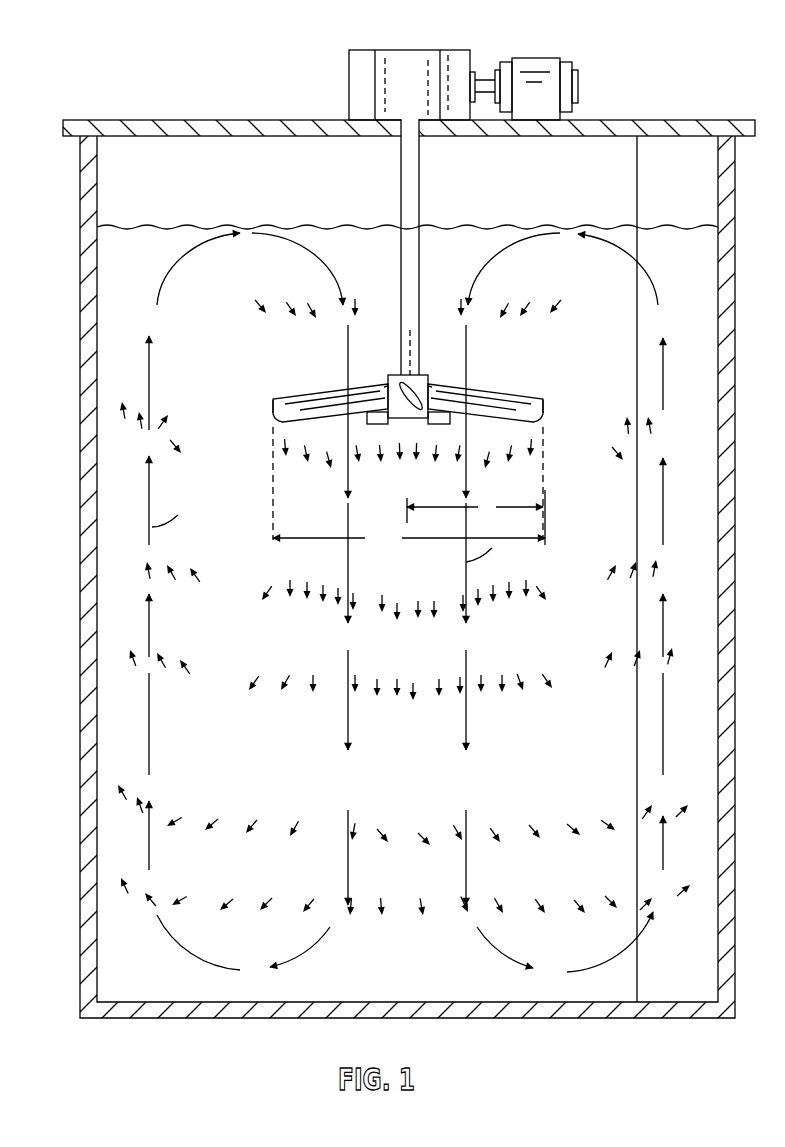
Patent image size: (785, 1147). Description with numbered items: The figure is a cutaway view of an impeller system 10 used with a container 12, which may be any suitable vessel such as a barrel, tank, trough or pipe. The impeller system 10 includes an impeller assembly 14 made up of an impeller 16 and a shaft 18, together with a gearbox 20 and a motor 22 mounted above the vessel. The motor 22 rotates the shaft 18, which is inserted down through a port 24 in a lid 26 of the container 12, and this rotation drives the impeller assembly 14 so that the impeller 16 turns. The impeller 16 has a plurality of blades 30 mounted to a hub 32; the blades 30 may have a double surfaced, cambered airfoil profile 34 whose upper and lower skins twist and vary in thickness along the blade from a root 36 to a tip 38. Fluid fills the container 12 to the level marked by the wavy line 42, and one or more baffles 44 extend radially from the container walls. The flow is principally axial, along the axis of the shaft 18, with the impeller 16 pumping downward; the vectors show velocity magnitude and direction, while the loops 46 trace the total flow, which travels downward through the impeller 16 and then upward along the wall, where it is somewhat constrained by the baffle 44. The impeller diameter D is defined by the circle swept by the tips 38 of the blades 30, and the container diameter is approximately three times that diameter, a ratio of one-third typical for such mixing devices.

The impeller system 10 is at (80, 31).
The container 12 is at (650, 1020).
The impeller assembly 14 is at (478, 20).
The impeller 16 is at (409, 414).
The shaft 18 is at (400, 143).
The gearbox 20 is at (349, 88).
The motor 22 is at (561, 63).
The port 24 is at (423, 142).
The lid 26 is at (658, 122).
The blades 30 is at (290, 397).
The hub 32 is at (420, 374).
The airfoil profile 34 is at (418, 419).
The root 36 is at (388, 384).
The tip 38 is at (273, 407).
The wavy line 42 is at (481, 227).
The baffles 44 is at (637, 150).
The loops 46 is at (150, 732).